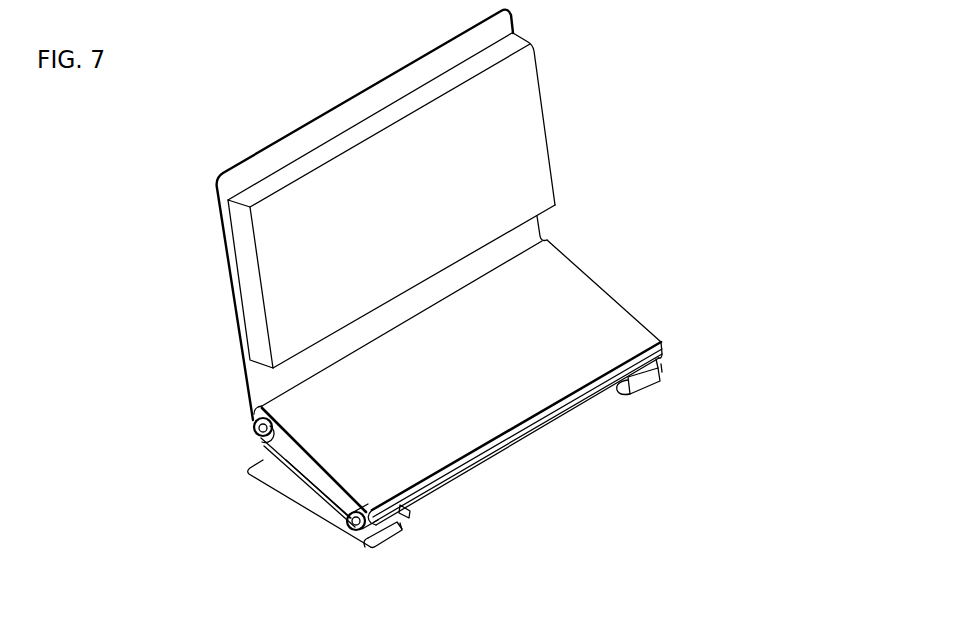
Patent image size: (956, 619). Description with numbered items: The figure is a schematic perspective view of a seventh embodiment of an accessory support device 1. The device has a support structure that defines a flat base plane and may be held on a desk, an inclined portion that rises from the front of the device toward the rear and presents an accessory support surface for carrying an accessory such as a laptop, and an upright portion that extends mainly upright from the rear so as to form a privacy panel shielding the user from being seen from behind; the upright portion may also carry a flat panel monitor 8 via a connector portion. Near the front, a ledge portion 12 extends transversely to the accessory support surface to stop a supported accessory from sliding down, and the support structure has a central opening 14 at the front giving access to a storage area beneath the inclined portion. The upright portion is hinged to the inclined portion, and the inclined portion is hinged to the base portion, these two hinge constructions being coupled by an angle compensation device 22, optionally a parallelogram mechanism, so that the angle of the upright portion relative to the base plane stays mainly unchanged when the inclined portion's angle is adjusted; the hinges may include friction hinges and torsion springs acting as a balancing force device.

The accessory support device 1 is at (158, 340).
The flat panel monitor 8 is at (557, 185).
The ledge portion 12 is at (663, 342).
The central opening 14 is at (487, 465).
The angle compensation device 22 is at (335, 498).